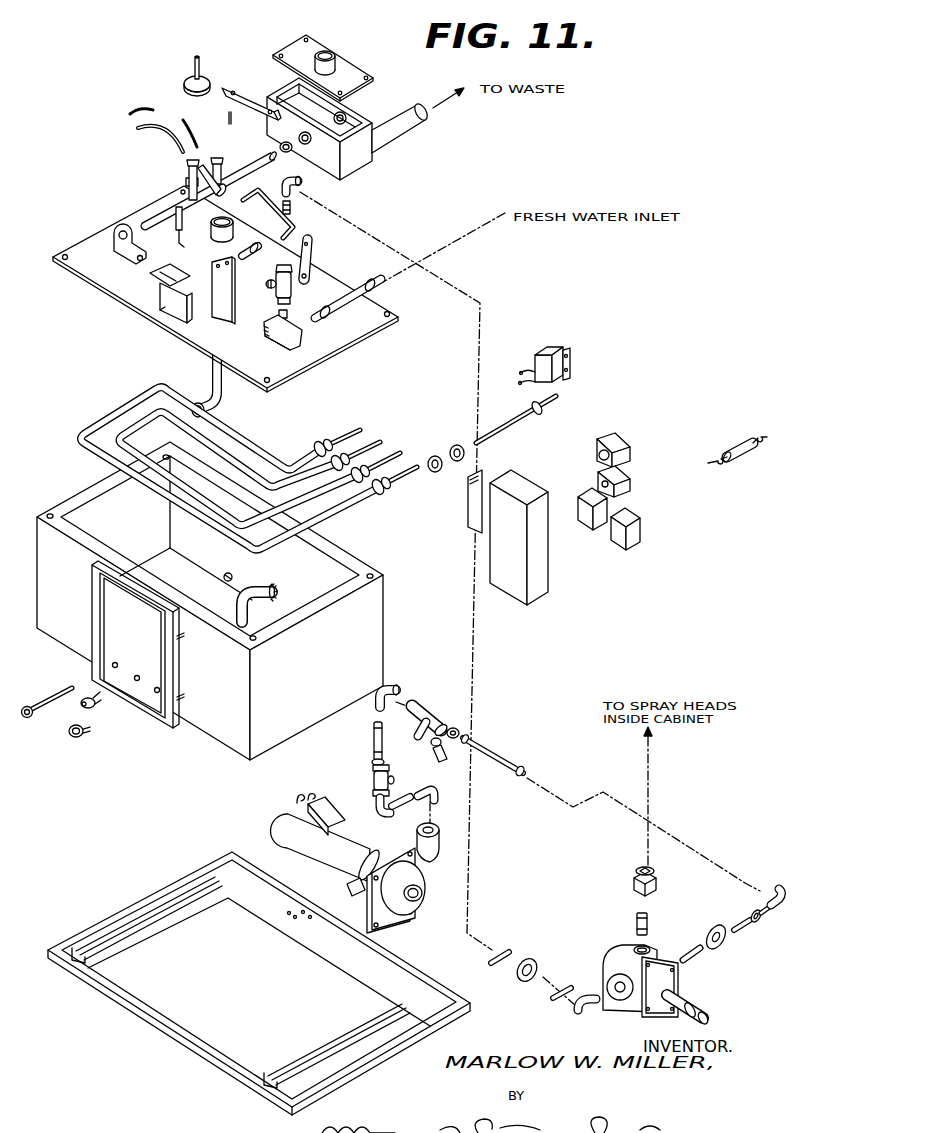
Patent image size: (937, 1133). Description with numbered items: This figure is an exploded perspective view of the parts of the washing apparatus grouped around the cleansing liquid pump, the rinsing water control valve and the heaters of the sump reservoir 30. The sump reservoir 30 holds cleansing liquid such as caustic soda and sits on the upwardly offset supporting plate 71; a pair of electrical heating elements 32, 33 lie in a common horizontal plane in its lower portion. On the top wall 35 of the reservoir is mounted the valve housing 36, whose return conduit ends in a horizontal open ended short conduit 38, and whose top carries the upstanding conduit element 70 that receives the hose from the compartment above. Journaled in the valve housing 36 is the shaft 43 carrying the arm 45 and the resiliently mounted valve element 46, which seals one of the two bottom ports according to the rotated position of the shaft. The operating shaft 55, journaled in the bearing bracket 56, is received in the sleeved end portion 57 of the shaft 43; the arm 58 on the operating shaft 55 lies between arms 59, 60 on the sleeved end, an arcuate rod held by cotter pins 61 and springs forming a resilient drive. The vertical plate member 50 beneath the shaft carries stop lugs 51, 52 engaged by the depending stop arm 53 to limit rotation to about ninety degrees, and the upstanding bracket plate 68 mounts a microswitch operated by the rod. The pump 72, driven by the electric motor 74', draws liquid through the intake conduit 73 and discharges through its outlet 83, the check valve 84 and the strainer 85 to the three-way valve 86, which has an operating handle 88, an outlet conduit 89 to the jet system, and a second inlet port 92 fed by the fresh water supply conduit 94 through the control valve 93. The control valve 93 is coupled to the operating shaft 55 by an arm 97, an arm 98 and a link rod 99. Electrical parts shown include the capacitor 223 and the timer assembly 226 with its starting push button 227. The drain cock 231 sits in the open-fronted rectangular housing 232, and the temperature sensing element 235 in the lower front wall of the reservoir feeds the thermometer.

The sump reservoir 30 is at (382, 617).
The electrical heating element 32 is at (118, 405).
The electrical heating element 33 is at (136, 424).
The top wall 35 is at (327, 355).
The valve housing 36 is at (362, 163).
The horizontal open ended short conduit 38 is at (230, 403).
The shaft 43 is at (254, 168).
The arm 45 is at (238, 87).
The valve element 46 is at (190, 78).
The vertical plate member 50 is at (191, 322).
The stop lug 51 is at (195, 295).
The stop lug 52 is at (162, 266).
The depending stop arm 53 is at (181, 234).
The operating shaft 55 is at (150, 217).
The bearing bracket 56 is at (115, 252).
The sleeved end portion 57 is at (210, 205).
The arm 58 is at (220, 163).
The arm 59 is at (225, 196).
The arm 60 is at (198, 163).
The cotter pin 61 is at (252, 252).
The upstanding bracket plate 68 is at (233, 310).
The upstanding conduit element 70 is at (333, 55).
The supporting plate 71 is at (205, 1055).
The pump 72 is at (390, 858).
The intake conduit 73 is at (278, 585).
The electric motor 74' is at (310, 845).
The outlet 83 is at (445, 850).
The check valve 84 is at (371, 778).
The strainer 85 is at (428, 712).
The three-way valve 86 is at (617, 958).
The operating handle 88 is at (690, 1000).
The conduit 89 is at (647, 917).
The second inlet port 92 is at (616, 997).
The control valve 93 is at (274, 280).
The fresh water supply conduit 94 is at (357, 290).
The arm 97 is at (186, 181).
The arm 98 is at (310, 245).
The link rod 99 is at (288, 224).
The capacitor 223 is at (740, 465).
The timer assembly 226 is at (545, 592).
The starting push button 227 is at (612, 440).
The drain cock 231 is at (73, 707).
The rectangular housing 232 is at (175, 672).
The temperature sensing element 235 is at (57, 689).